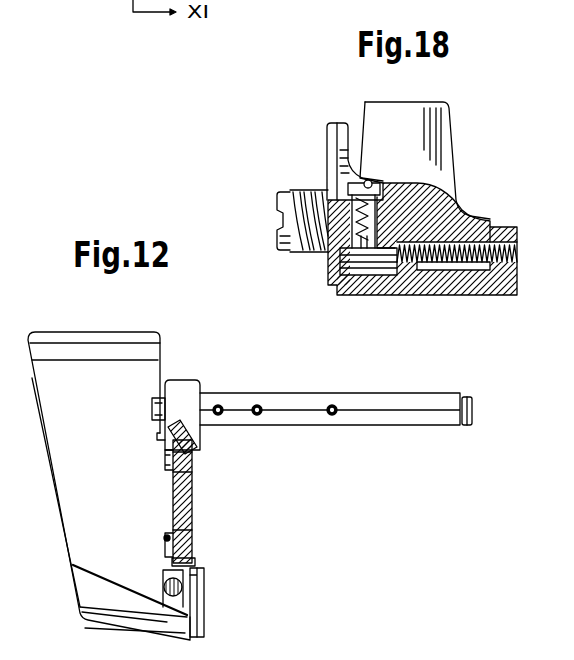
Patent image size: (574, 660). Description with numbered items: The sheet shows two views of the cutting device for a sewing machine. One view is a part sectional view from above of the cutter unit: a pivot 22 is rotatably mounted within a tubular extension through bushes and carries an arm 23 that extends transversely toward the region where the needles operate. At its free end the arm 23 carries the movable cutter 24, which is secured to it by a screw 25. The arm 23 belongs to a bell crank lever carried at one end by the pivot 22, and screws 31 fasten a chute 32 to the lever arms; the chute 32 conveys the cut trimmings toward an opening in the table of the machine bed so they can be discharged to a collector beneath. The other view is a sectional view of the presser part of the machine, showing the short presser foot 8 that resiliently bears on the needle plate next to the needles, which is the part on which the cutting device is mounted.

In FIG. 18, the presser foot 8 is at (470, 152).
In FIG. 12, the pivot 22 is at (308, 405).
In FIG. 12, the arm 23 is at (192, 500).
In FIG. 12, the movable cutter 24 is at (203, 603).
In FIG. 12, the screw 25 is at (170, 587).
In FIG. 12, the screws 31 is at (167, 463).
In FIG. 12, the chute 32 is at (63, 453).